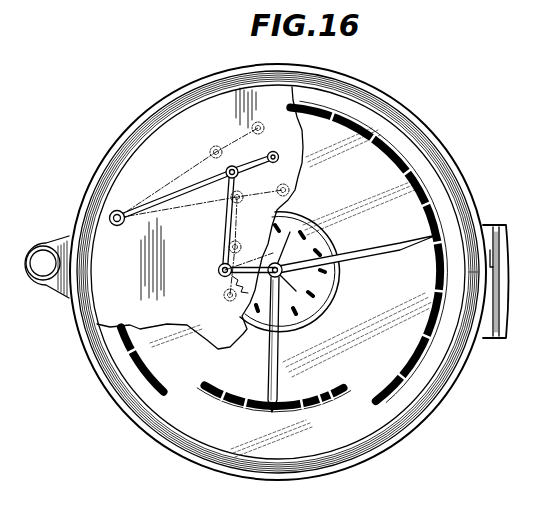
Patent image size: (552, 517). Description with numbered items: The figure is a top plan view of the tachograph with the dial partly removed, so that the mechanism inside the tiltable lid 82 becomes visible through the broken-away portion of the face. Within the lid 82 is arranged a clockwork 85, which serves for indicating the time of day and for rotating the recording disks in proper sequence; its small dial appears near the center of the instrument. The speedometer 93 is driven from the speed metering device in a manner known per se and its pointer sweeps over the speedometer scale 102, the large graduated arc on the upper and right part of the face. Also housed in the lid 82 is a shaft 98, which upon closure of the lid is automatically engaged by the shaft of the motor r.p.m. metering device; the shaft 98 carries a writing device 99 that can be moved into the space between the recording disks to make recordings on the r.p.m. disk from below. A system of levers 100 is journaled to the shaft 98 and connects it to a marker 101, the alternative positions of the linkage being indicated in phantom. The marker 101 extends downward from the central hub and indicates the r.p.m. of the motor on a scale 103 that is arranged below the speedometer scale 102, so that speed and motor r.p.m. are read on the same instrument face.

The tiltable lid 82 is at (188, 450).
The clockwork 85 is at (331, 309).
The speedometer 93 is at (351, 254).
The shaft 98 is at (116, 226).
The writing device 99 is at (264, 130).
The system of levers 100 is at (190, 190).
The marker 101 is at (272, 363).
The speedometer scale 102 is at (421, 180).
The scale 103 is at (321, 410).